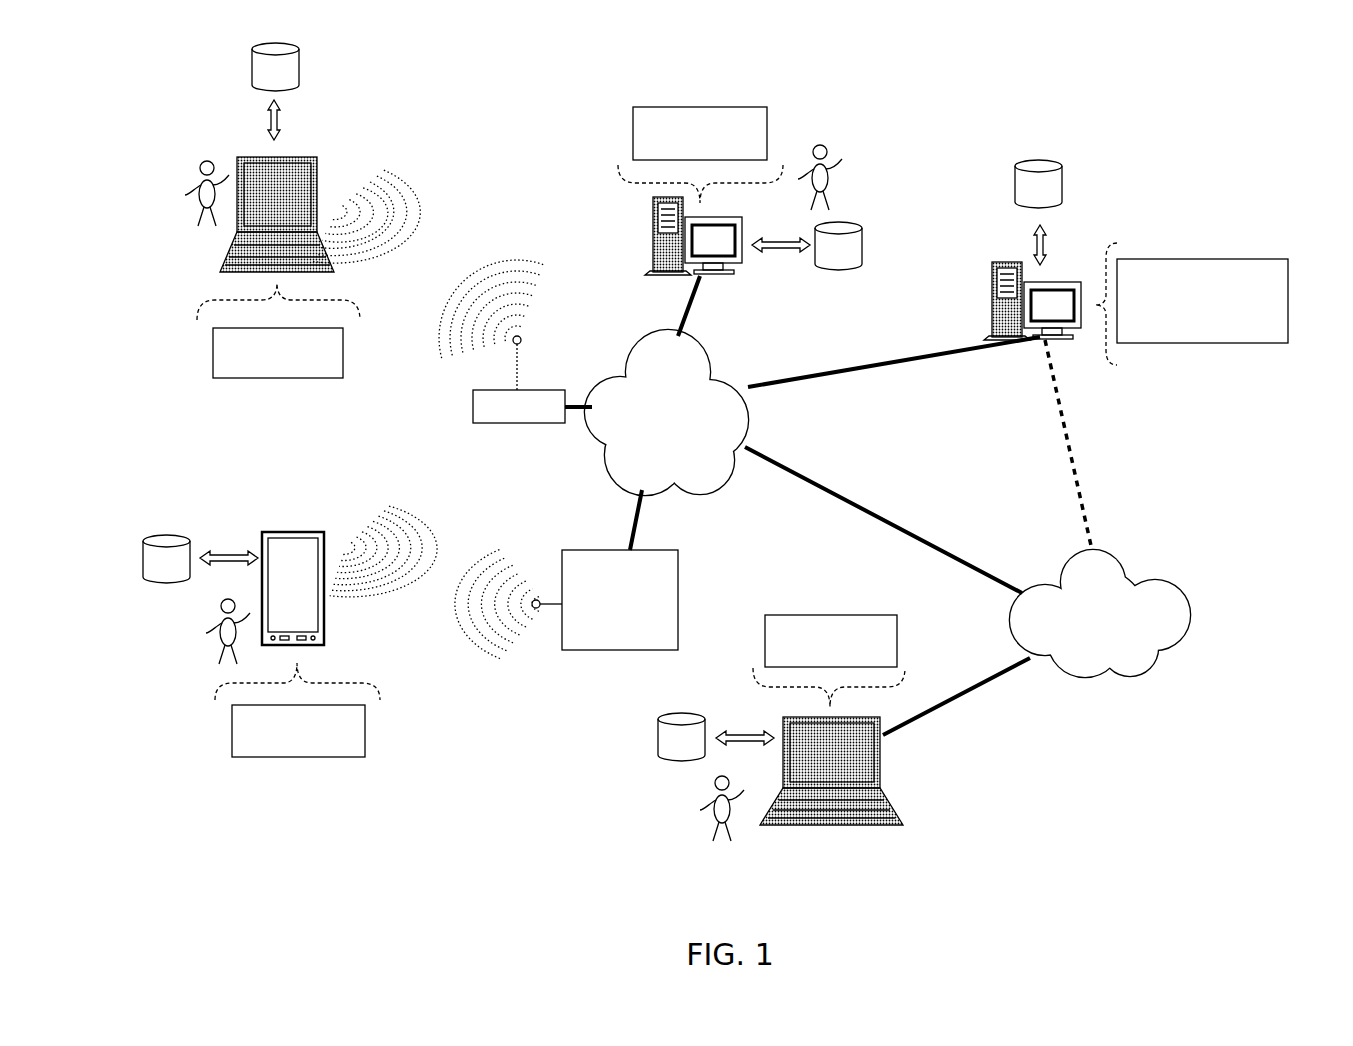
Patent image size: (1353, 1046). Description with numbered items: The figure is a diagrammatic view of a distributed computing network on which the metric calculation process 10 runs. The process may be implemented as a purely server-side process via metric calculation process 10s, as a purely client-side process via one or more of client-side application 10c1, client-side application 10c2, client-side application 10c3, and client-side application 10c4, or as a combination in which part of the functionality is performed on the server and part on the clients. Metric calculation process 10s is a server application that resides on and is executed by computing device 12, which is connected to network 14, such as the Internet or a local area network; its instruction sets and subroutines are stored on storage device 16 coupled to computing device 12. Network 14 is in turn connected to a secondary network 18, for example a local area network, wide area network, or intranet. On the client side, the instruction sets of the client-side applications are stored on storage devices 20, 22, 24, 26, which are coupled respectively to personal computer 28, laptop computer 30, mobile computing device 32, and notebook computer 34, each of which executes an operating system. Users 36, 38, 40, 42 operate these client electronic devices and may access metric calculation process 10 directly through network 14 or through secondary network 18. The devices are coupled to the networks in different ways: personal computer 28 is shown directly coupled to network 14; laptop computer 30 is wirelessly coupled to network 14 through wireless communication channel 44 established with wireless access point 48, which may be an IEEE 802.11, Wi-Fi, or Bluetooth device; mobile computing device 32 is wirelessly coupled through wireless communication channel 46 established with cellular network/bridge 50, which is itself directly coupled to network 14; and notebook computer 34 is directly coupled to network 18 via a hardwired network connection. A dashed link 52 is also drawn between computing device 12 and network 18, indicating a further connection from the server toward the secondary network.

The metric calculation process 10 is at (1118, 110).
The metric calculation process (server-side) 10s is at (1288, 293).
The client-side application 10c1 is at (767, 135).
The client-side application 10c2 is at (343, 356).
The client-side application 10c3 is at (365, 735).
The client-side application 10c4 is at (897, 632).
The computing device 12 is at (992, 283).
The network 14 is at (666, 412).
The storage device 16 is at (1038, 184).
The secondary network 18 is at (1100, 613).
The storage device 20 is at (838, 246).
The storage device 22 is at (275, 67).
The storage device 24 is at (166, 559).
The storage device 26 is at (681, 737).
The personal computer 28 is at (740, 237).
The laptop computer 30 is at (318, 183).
The mobile computing device 32 is at (335, 587).
The notebook computer 34 is at (882, 764).
The user 36 is at (838, 152).
The user 38 is at (172, 184).
The user 40 is at (208, 612).
The user 42 is at (688, 800).
The wireless communication channel 44 is at (458, 232).
The wireless communication channel 46 is at (450, 553).
The wireless access point (WAP) 48 is at (472, 407).
The cellular network/bridge 50 is at (680, 568).
The communication link 52 is at (1035, 448).